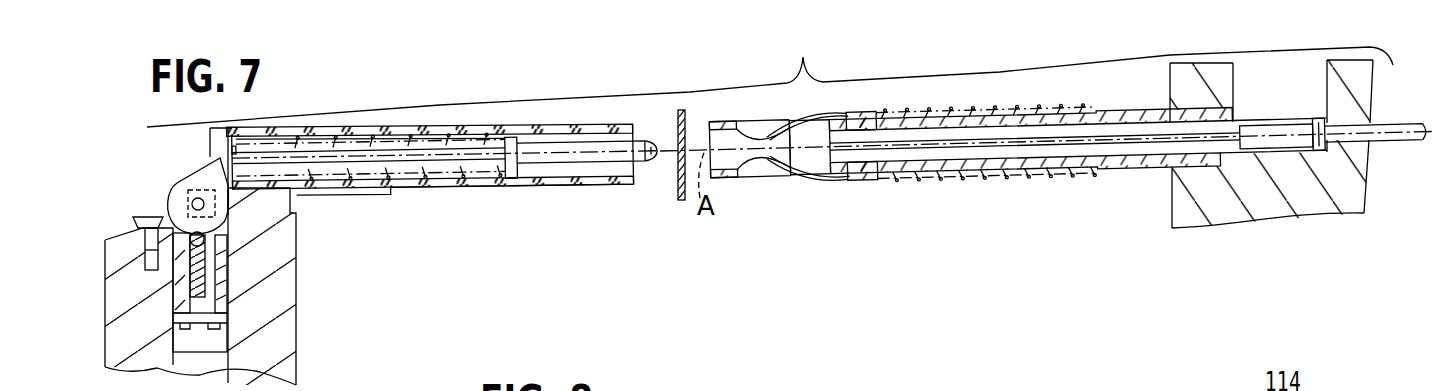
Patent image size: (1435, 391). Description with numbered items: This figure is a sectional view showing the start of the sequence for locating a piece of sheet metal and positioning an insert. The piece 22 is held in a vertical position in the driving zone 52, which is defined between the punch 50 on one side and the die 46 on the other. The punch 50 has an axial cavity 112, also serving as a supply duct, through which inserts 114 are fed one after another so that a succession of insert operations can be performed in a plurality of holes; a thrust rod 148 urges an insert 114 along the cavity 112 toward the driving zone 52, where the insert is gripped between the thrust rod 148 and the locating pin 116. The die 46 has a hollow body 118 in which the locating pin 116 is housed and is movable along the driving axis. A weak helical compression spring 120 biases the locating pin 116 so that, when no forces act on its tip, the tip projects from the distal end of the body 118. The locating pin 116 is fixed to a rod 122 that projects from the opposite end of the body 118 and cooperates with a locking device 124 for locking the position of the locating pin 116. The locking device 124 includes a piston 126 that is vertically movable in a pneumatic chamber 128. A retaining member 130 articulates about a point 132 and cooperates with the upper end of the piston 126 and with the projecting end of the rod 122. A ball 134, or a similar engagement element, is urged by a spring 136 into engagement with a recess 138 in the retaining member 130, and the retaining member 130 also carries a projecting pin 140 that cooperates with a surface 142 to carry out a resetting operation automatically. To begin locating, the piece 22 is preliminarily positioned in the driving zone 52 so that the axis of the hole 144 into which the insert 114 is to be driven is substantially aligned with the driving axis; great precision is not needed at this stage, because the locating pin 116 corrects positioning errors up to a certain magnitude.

The piece 22 is at (690, 120).
The die 46 is at (505, 201).
The punch 50 is at (915, 204).
The driving zone 52 is at (651, 202).
The axial cavity 112 is at (1062, 138).
The insert 114 is at (1267, 130).
The locating pin 116 is at (577, 145).
The hollow body 118 is at (530, 127).
The helical compression spring 120 is at (421, 172).
The rod 122 is at (400, 152).
The locking device 124 is at (154, 166).
The piston 126 is at (212, 315).
The pneumatic chamber 128 is at (227, 347).
The retaining member 130 is at (195, 172).
The point 132 is at (290, 222).
The ball 134 is at (205, 236).
The spring 136 is at (223, 305).
The recess 138 is at (192, 258).
The projecting pin 140 is at (178, 203).
The surface 142 is at (172, 199).
The hole 144 is at (678, 143).
The thrust rod 148 is at (1405, 165).